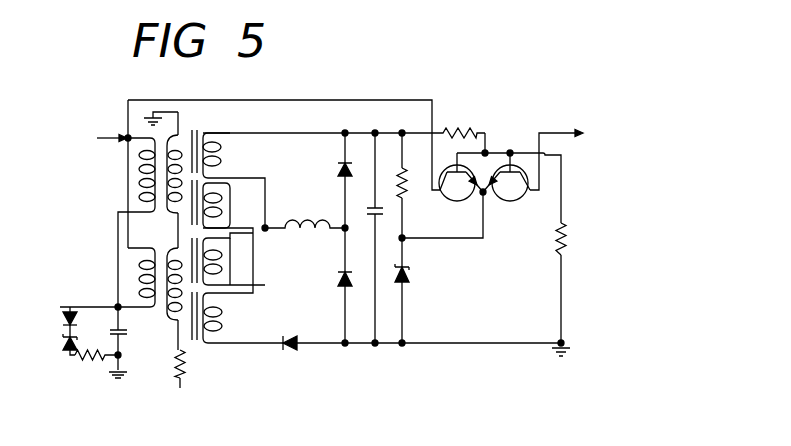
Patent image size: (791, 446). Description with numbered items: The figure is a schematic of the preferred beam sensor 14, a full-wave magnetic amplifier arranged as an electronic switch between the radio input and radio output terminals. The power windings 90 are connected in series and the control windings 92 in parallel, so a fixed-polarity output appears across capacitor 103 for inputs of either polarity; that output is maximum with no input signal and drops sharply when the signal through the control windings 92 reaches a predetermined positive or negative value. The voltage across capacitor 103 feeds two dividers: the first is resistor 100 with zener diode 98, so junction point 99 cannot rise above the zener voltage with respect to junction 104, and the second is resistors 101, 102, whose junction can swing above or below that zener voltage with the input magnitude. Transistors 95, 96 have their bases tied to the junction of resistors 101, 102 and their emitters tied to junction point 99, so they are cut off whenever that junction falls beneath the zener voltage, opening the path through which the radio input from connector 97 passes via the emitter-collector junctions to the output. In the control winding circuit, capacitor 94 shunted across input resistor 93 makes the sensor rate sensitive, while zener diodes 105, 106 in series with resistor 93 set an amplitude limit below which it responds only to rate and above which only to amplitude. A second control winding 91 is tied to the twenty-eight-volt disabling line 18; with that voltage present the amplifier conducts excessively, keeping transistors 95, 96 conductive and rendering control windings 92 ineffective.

The beam sensor 14 is at (344, 262).
The 28-volt disabling line 18 is at (182, 379).
The power windings 90 is at (227, 158).
The second control winding 91 is at (162, 310).
The control windings 92 is at (143, 219).
The input resistor 93 is at (78, 338).
The capacitor 94 is at (125, 336).
The transistor 95 is at (454, 208).
The transistor 96 is at (511, 208).
The connector 97 is at (279, 101).
The zener diode 98 is at (404, 280).
The junction point 99 is at (403, 240).
The resistor 100 is at (402, 197).
The resistor 101 is at (471, 129).
The resistor 102 is at (565, 254).
The capacitor 103 is at (371, 208).
The junction 104 is at (403, 344).
The zener diode 105 is at (69, 311).
The zener diode 106 is at (74, 357).